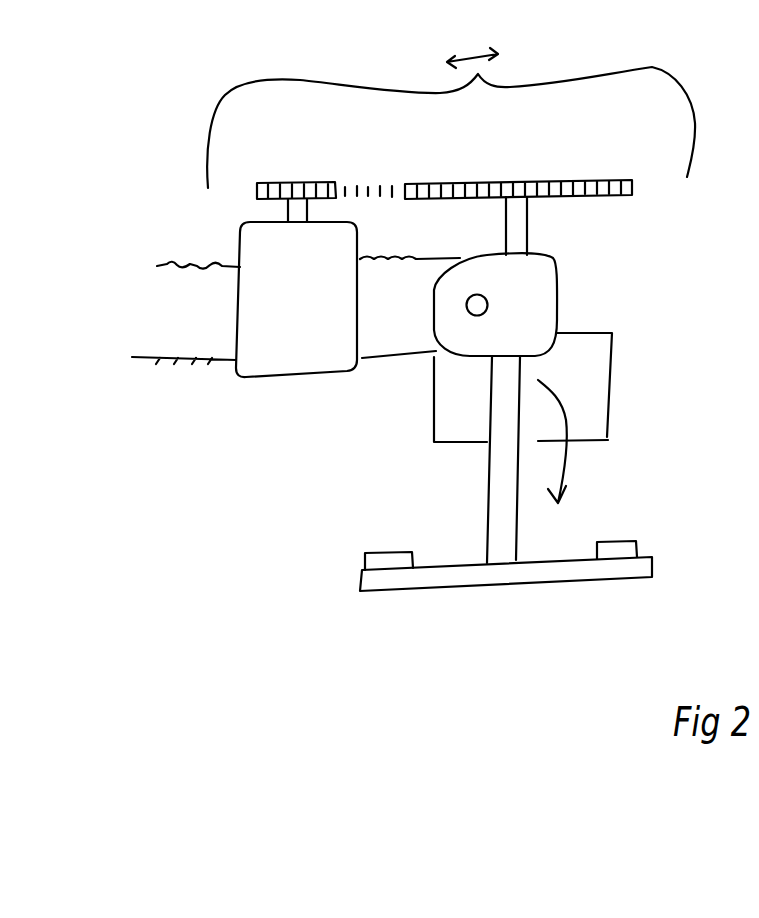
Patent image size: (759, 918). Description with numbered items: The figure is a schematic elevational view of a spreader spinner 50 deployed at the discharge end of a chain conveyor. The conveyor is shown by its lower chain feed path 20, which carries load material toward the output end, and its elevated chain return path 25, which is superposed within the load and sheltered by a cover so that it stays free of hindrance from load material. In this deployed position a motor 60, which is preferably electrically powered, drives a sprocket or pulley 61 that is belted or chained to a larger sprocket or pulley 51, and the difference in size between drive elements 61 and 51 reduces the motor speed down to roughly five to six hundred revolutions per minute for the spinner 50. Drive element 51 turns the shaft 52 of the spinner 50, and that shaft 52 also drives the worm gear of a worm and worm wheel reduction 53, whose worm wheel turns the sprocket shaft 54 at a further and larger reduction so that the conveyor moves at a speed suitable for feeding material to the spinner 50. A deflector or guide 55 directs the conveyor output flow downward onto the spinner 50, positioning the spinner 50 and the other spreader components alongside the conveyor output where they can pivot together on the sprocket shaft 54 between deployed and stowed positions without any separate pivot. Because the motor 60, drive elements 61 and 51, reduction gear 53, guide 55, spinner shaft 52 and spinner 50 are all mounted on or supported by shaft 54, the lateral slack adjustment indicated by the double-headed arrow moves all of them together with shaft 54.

The lower chain feed path 20 is at (173, 360).
The chain return path 25 is at (205, 256).
The spinner 50 is at (450, 563).
The sprocket or pulley 51 is at (582, 178).
The shaft 52 is at (489, 490).
The worm and worm wheel reduction 53 is at (547, 282).
The shaft 54 is at (468, 316).
The deflector or guide 55 is at (598, 377).
The motor 60 is at (285, 367).
The sprocket or pulley 61 is at (275, 182).